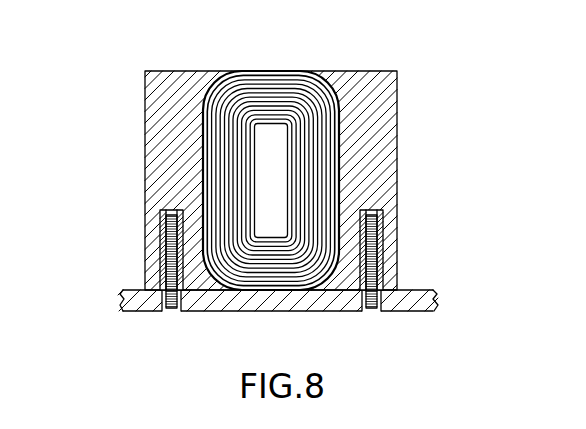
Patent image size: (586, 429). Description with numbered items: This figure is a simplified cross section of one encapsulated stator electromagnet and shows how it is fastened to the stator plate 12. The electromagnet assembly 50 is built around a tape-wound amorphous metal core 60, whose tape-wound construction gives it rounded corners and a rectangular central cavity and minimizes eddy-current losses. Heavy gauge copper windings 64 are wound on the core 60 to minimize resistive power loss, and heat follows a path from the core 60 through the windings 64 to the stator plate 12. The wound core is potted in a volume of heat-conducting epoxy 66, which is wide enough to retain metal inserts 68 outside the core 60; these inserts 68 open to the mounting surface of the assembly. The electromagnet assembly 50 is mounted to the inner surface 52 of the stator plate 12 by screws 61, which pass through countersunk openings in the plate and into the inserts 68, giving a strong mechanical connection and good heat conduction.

The stator plate 12 is at (234, 311).
The electromagnet assembly 50 is at (267, 178).
The inner surface of stator plate 52 is at (287, 307).
The tape-wound amorphous metal core 60 is at (240, 168).
The screws 61 is at (172, 311).
The copper windings 64 is at (201, 117).
The heat-conducting epoxy 66 is at (380, 137).
The metal inserts 68 is at (162, 242).